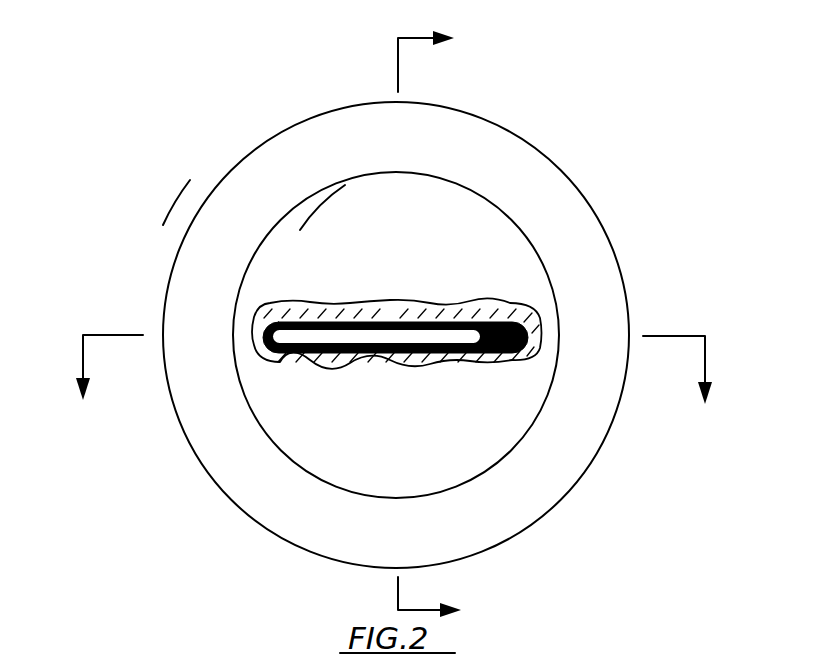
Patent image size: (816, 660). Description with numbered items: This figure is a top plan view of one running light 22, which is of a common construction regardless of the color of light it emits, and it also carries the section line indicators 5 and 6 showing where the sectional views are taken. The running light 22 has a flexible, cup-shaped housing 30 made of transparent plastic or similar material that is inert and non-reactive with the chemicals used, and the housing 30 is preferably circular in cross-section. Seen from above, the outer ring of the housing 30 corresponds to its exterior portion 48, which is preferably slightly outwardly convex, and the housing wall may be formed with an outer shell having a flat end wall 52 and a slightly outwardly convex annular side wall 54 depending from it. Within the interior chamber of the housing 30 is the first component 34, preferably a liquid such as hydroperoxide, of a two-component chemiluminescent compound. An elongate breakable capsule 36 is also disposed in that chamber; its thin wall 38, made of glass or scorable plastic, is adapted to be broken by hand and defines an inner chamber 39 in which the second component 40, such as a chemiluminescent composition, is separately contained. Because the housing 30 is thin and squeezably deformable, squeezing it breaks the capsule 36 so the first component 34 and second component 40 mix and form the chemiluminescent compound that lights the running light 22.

The section line 5- 5 is at (382, 354).
The section line 6- 6 is at (408, 321).
The running light 22 is at (428, 324).
The housing 30 is at (606, 126).
The first component 34 is at (397, 376).
The capsule 36 is at (391, 315).
The thin wall 38 is at (349, 356).
The inner chamber 39 is at (338, 339).
The second component 40 is at (495, 348).
The exterior portion 48 is at (241, 474).
The flat end wall 52 is at (331, 217).
The annular side wall 54 is at (212, 225).